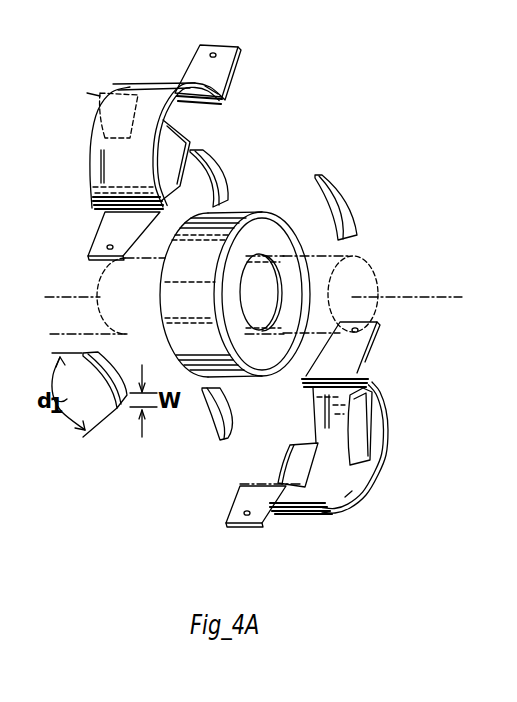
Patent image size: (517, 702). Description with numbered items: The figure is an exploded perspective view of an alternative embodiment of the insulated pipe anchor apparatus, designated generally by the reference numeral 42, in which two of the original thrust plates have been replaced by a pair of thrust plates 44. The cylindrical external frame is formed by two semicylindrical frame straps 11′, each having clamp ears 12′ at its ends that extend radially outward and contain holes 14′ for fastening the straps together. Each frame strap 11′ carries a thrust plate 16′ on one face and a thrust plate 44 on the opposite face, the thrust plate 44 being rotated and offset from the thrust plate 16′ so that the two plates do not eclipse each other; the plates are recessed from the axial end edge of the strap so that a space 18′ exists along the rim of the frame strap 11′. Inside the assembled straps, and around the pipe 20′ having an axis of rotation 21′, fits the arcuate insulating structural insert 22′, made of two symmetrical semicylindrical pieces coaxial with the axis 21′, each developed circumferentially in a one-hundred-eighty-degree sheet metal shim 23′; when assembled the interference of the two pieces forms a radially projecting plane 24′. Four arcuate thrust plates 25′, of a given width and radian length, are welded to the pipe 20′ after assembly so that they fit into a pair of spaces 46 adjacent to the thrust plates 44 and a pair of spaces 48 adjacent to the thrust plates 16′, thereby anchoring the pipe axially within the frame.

The frame strap 11′ is at (92, 197).
The clamp ear 12′ is at (233, 46).
The hole 14′ is at (214, 52).
The thrust plate 16′ is at (105, 103).
The space 18′ is at (392, 451).
The pipe 20′ is at (104, 318).
The axis of rotation 21′ is at (443, 296).
The insulating structural insert 22′ is at (240, 273).
The shim 23′ is at (238, 212).
The plane 24′ is at (273, 328).
The thrust plate 25′ is at (212, 167).
The insulated pipe anchor apparatus embodiment 42 is at (168, 473).
The thrust plate 44 is at (186, 143).
The space 46 is at (150, 88).
The space 48 is at (100, 165).